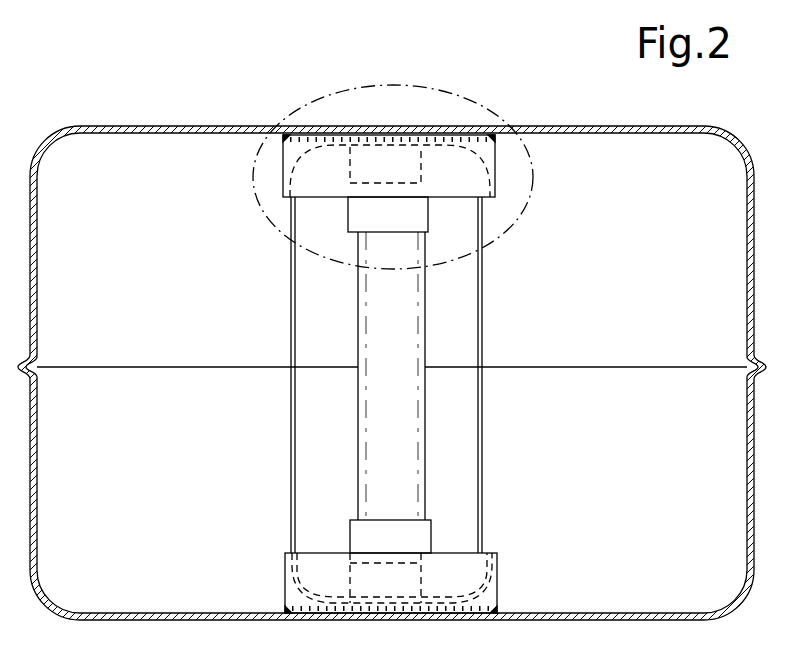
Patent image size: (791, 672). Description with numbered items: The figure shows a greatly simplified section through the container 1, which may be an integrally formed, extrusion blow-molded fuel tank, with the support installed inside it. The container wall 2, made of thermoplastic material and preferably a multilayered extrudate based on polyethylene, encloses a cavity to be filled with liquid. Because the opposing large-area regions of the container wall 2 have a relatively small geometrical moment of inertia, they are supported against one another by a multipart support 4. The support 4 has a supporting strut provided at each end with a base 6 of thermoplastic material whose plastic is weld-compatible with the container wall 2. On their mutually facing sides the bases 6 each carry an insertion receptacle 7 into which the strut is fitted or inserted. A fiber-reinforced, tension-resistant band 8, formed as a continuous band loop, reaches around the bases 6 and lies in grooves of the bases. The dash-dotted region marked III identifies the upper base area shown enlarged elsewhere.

The container 1 is at (160, 116).
The container wall 2 is at (626, 123).
The detail III is at (302, 100).
The multipart support 4 is at (499, 346).
The base 6 is at (484, 156).
The insertion receptacle 7 is at (428, 213).
The tension-resistant band 8 is at (482, 300).